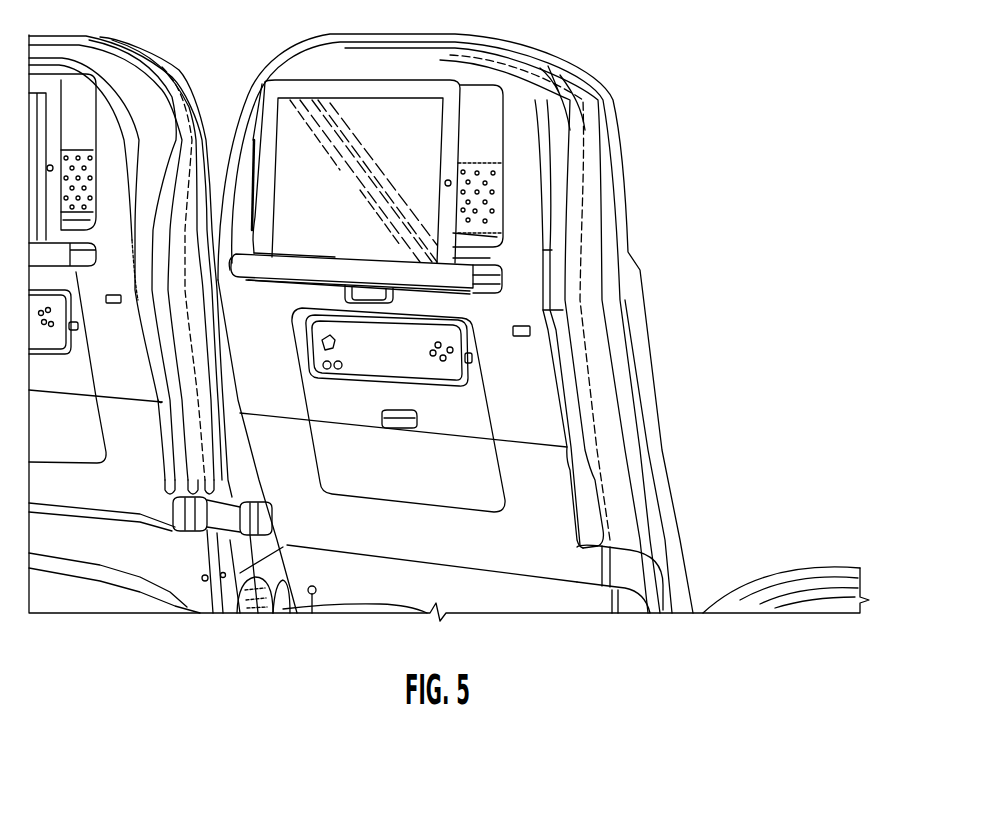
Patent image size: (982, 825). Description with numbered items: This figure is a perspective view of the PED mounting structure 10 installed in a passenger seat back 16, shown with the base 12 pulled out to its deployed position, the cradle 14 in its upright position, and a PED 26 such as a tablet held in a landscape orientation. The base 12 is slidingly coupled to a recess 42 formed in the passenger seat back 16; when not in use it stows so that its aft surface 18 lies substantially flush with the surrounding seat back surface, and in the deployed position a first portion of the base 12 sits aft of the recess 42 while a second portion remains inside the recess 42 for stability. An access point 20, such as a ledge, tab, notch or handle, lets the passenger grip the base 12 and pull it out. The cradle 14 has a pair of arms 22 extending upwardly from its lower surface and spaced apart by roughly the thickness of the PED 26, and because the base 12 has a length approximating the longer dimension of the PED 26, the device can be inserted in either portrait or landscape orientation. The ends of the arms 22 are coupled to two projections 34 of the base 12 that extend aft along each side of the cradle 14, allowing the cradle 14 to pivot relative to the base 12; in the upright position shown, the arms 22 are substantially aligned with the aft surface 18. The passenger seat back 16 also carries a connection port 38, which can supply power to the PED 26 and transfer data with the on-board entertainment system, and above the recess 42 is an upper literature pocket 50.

The PED mounting structure 10 is at (451, 311).
The base 12 is at (463, 280).
The cradle 14 is at (388, 272).
The passenger seat back 16 is at (510, 43).
The aft surface 18 is at (235, 263).
The access point 20 is at (368, 292).
The arm 22 is at (292, 265).
The PED 26 is at (365, 130).
The projection 34 is at (230, 250).
The connection port 38 is at (530, 333).
The recess 42 is at (500, 272).
The upper literature pocket 50 is at (490, 155).